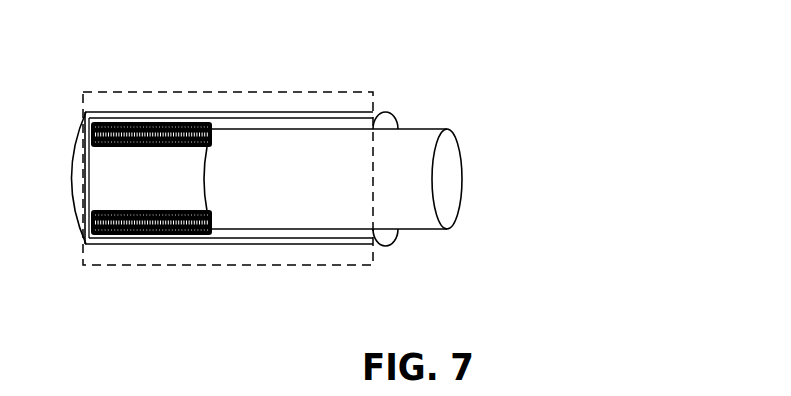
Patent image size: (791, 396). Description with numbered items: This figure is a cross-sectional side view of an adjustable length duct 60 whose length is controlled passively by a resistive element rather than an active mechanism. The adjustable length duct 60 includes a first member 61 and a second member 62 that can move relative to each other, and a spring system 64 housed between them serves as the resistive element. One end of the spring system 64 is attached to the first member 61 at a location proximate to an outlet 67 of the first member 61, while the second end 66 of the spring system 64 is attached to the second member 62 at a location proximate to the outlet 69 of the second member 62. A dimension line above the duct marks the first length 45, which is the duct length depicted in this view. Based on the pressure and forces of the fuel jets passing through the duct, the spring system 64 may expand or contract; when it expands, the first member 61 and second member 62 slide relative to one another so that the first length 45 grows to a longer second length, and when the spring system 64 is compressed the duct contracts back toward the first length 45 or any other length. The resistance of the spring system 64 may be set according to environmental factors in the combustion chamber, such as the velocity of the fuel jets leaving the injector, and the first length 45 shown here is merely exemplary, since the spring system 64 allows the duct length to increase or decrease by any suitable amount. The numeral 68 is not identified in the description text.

The first length 45 is at (466, 13).
The adjustable length duct 60 is at (331, 180).
The first member 61 is at (409, 145).
The second member 62 is at (353, 121).
The spring system 64 is at (168, 148).
The second end 66 is at (90, 131).
The outlet 67 is at (205, 180).
The shaft end face 68 is at (452, 183).
The outlet 69 is at (70, 202).